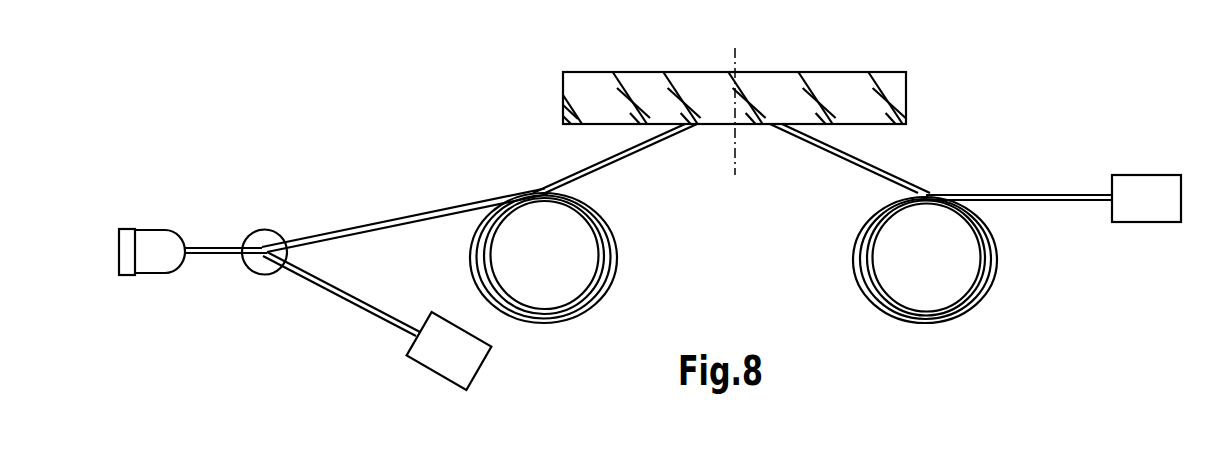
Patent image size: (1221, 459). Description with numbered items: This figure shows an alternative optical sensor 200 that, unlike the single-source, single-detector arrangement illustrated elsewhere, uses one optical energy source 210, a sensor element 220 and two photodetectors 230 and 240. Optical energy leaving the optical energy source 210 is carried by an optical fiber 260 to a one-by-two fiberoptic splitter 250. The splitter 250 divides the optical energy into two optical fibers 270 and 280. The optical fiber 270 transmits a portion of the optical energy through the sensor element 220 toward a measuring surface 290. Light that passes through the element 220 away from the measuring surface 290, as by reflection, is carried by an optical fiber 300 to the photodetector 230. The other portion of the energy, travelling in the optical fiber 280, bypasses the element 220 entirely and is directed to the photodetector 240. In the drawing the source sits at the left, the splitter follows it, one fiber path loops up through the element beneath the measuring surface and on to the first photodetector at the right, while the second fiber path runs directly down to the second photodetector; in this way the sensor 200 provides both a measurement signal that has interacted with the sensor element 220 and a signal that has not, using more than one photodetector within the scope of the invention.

The optical sensor 200 is at (1008, 98).
The optical energy source 210 is at (148, 230).
The sensor element 220 is at (906, 98).
The photodetector 230 is at (1147, 175).
The photodetector 240 is at (447, 380).
The 1×2 fiberoptic splitter 250 is at (263, 229).
The optical fiber 260 is at (220, 257).
The optical fiber 270 is at (452, 205).
The optical fiber 280 is at (348, 303).
The measuring surface 290 is at (642, 72).
The optical fiber 300 is at (1040, 193).